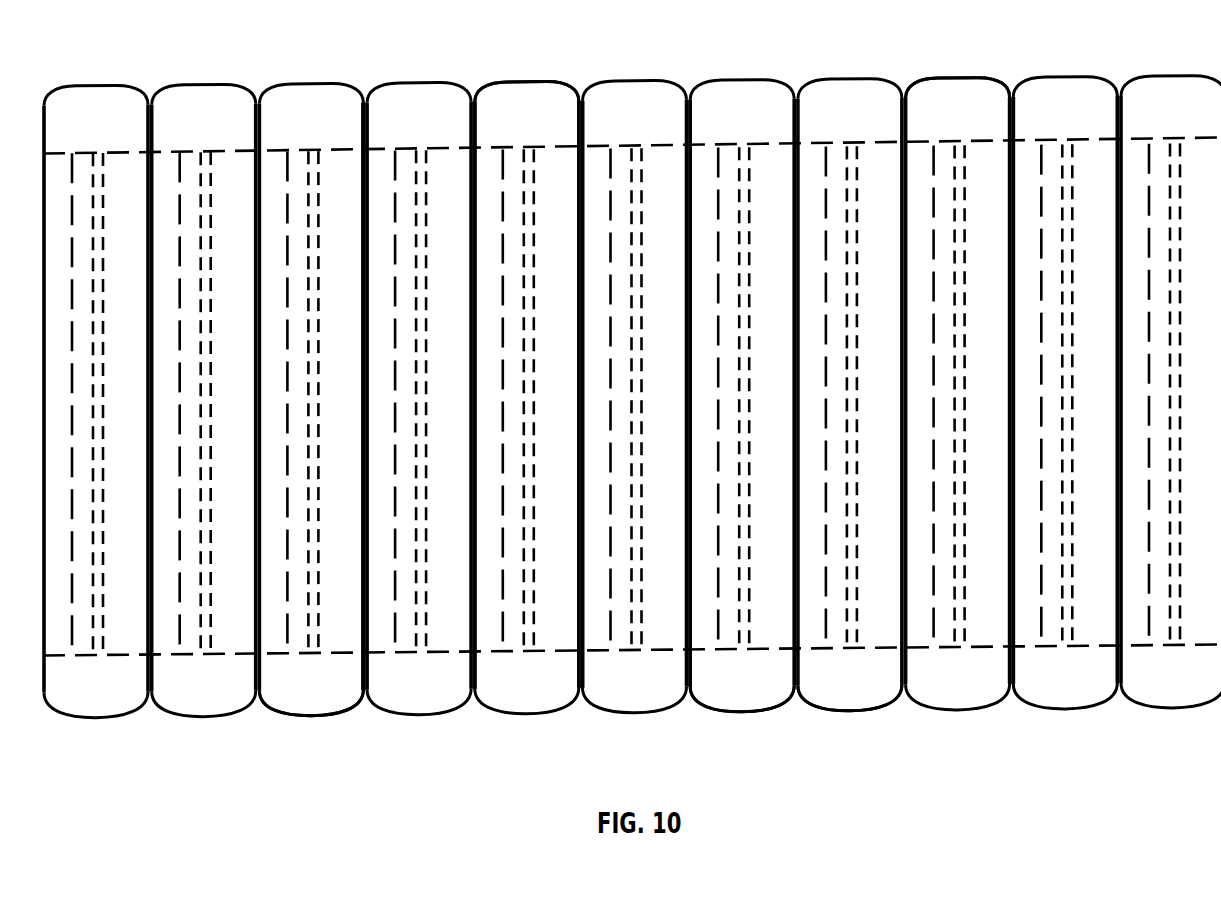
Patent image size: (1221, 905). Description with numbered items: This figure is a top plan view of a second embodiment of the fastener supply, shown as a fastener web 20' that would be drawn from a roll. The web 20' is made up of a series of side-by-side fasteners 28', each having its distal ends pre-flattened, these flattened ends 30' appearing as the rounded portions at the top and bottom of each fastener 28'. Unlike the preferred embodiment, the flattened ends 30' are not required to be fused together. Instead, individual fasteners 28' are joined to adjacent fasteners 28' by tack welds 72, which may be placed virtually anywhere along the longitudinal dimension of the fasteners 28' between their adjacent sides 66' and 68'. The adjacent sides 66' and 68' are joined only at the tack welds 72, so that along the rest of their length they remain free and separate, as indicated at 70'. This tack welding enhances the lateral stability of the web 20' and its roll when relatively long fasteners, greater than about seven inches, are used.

The fastener web 20' is at (632, 368).
The fastener 28' is at (869, 396).
The flattened end 30' is at (567, 397).
The adjacent side 66' is at (436, 396).
The adjacent side 68' is at (425, 395).
The free and separate region 70' is at (545, 395).
The tack weld 72 is at (364, 229).